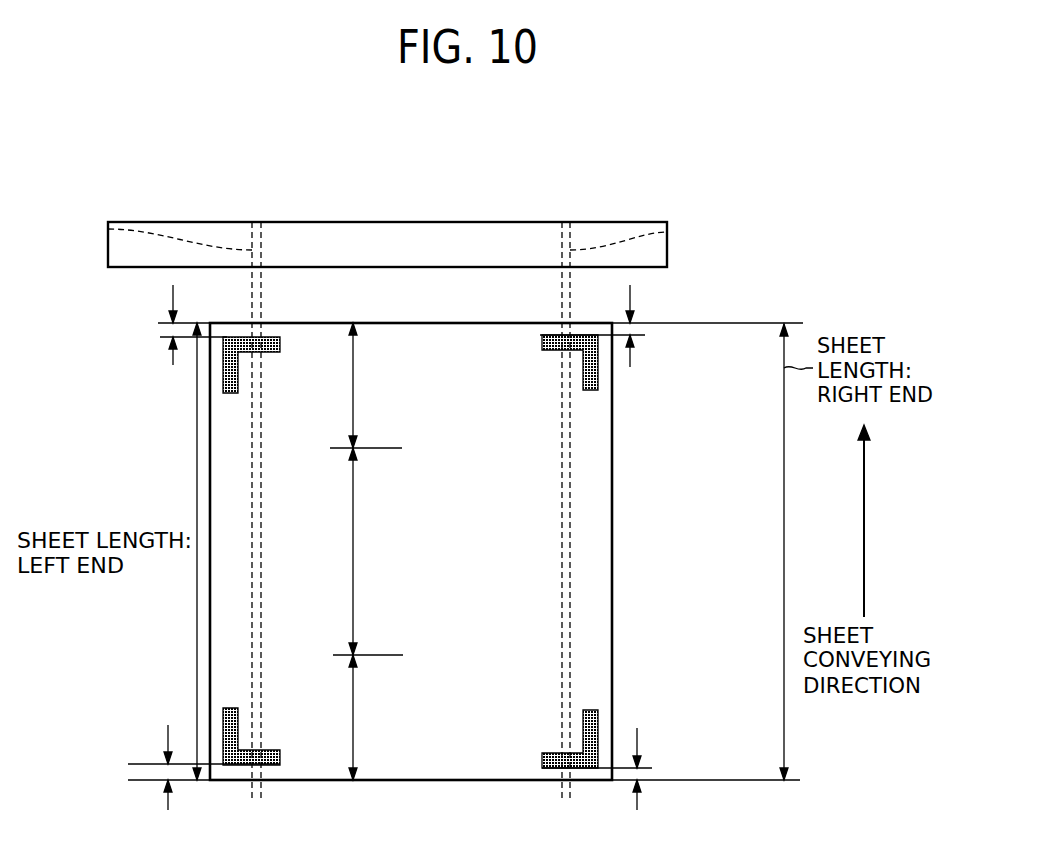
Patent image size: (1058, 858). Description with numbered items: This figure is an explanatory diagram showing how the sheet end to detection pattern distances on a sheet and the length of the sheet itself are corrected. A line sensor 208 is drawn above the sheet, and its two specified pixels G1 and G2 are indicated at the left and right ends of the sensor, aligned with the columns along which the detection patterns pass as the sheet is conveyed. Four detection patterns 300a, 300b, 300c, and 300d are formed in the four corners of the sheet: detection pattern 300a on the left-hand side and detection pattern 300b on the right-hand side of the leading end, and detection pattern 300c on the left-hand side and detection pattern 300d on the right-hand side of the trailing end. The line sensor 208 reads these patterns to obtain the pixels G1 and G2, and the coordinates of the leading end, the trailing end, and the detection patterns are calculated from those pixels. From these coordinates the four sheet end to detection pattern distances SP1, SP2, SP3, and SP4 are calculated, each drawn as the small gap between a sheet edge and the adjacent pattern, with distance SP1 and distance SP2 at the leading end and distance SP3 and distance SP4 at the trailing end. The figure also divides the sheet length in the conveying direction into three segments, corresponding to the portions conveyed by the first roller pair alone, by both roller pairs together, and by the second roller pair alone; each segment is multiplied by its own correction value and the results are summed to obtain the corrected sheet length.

The line sensor 208 is at (395, 222).
The pixel G1 is at (108, 229).
The pixel G2 is at (667, 232).
The detection pattern 300a is at (272, 336).
The detection pattern 300b is at (551, 335).
The detection pattern 300c is at (276, 767).
The detection pattern 300d is at (548, 770).
The sheet end to detection pattern distance SP1 is at (165, 337).
The sheet end to detection pattern distance SP2 is at (645, 335).
The sheet end to detection pattern distance SP3 is at (128, 764).
The sheet end to detection pattern distance SP4 is at (652, 773).